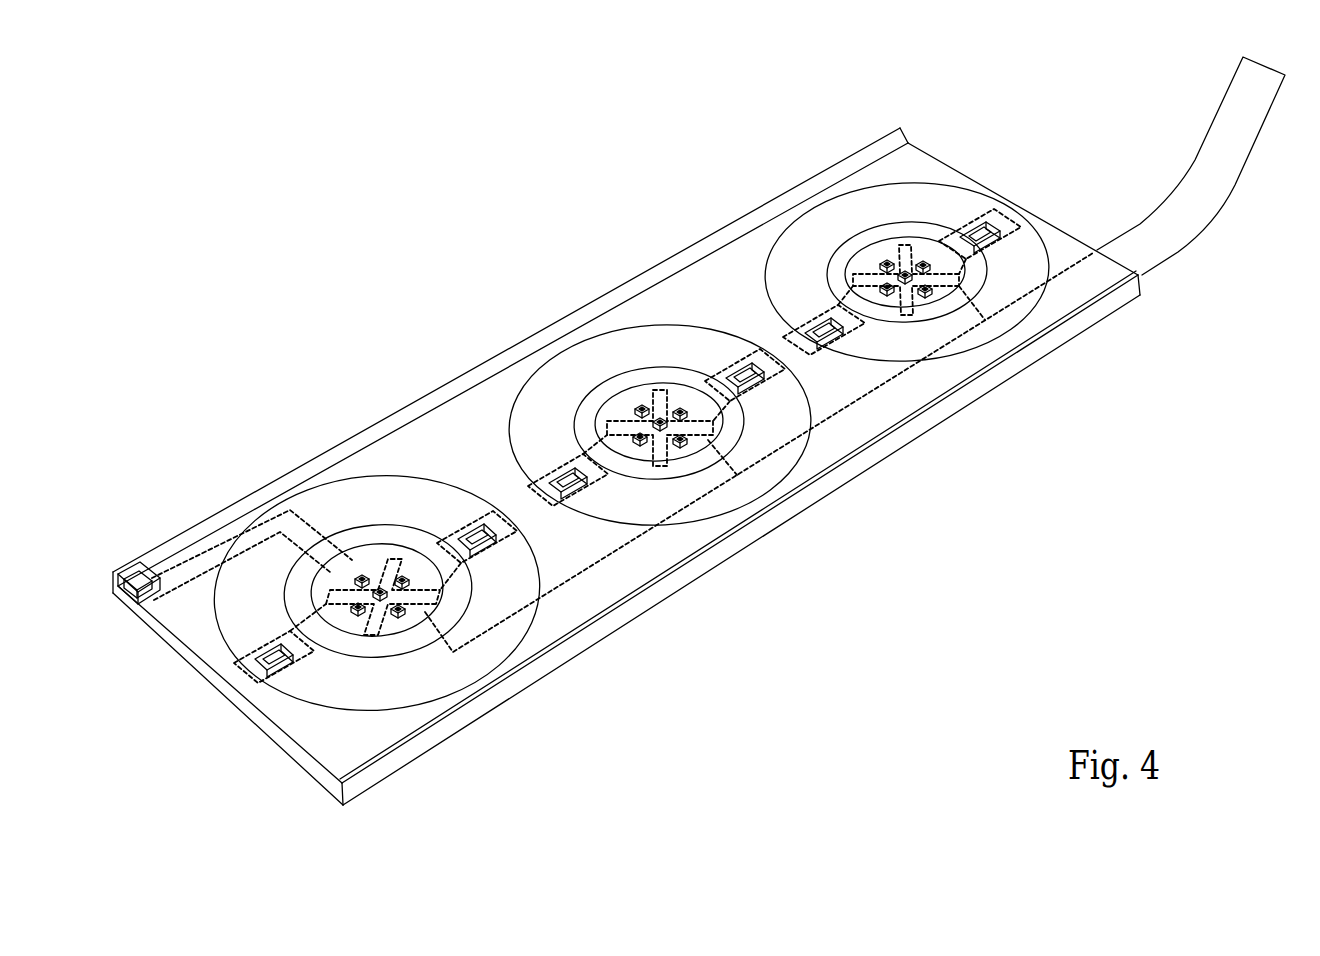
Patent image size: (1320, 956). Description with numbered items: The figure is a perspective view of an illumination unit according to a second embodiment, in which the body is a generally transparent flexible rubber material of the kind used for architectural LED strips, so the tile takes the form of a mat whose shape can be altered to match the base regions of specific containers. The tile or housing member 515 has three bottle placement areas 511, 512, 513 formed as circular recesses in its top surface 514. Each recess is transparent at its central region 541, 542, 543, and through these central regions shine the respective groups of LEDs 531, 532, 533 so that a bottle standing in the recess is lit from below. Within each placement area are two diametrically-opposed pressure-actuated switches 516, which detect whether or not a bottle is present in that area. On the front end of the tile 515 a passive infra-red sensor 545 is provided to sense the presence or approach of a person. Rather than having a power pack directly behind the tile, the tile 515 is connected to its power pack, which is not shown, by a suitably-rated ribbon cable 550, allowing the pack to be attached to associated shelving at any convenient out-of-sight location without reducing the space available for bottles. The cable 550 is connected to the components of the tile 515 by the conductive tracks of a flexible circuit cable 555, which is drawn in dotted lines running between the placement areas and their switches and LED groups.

The bottle placement area 511 is at (432, 684).
The bottle placement area 512 is at (744, 494).
The bottle placement area 513 is at (983, 338).
The top surface 514 is at (453, 437).
The tile or housing member 515 is at (985, 452).
The pressure-actuated switches 516 is at (268, 658).
The group of LEDs 531 is at (358, 577).
The group of LEDs 532 is at (638, 407).
The group of LEDs 533 is at (884, 262).
The central region 541 is at (440, 598).
The central region 542 is at (718, 433).
The central region 543 is at (953, 287).
The passive infra-red sensor 545 is at (134, 561).
The ribbon cable 550 is at (1220, 141).
The flexible circuit cable 555 is at (617, 553).